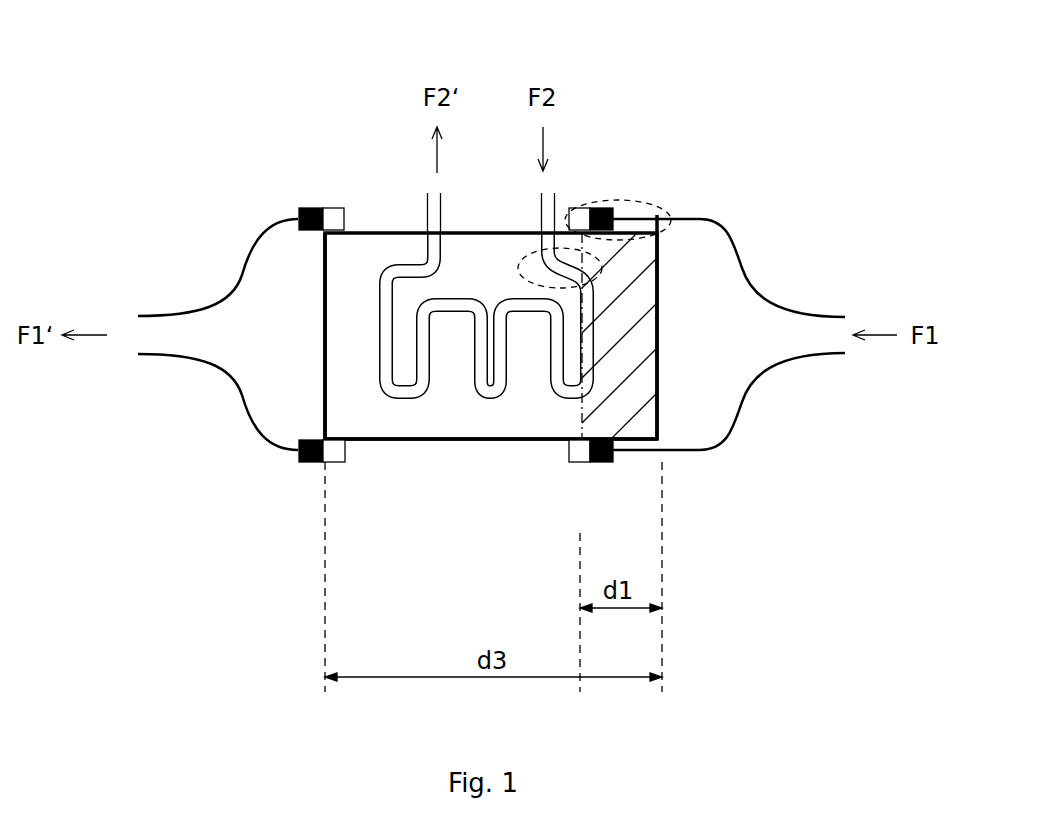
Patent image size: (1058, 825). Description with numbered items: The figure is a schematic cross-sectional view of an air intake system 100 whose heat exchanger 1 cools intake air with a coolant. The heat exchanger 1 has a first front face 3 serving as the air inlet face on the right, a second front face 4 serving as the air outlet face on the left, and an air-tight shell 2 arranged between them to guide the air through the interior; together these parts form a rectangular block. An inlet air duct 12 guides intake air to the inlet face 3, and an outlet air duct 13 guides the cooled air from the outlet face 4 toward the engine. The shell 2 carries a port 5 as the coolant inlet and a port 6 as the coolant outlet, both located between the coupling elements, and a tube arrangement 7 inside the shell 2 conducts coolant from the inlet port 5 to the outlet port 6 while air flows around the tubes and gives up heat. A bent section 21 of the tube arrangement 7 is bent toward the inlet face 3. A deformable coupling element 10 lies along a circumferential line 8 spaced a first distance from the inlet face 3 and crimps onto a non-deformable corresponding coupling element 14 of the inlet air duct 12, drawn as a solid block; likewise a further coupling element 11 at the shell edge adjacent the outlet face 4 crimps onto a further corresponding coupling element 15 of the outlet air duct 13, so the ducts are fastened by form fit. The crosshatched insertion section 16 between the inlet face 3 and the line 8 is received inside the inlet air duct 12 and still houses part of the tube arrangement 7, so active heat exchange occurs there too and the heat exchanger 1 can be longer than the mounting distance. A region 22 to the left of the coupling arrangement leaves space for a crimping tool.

The air intake system 100 is at (132, 75).
The heat exchanger 1 is at (392, 208).
The shell 2 is at (452, 440).
The first front face 3 is at (661, 298).
The second front face 4 is at (321, 343).
The port 5 is at (557, 193).
The port 6 is at (427, 193).
The tube arrangement 7 is at (552, 397).
The circumferential line 8 is at (580, 400).
The coupling element 10 is at (586, 208).
The further coupling element 11 is at (329, 208).
The inlet air duct 12 is at (744, 280).
The outlet air duct 13 is at (240, 275).
The corresponding coupling element 14 is at (612, 208).
The further corresponding coupling element 15 is at (300, 208).
The insertion section 16 is at (590, 298).
The bent section 21 is at (522, 257).
The region 22 is at (668, 218).